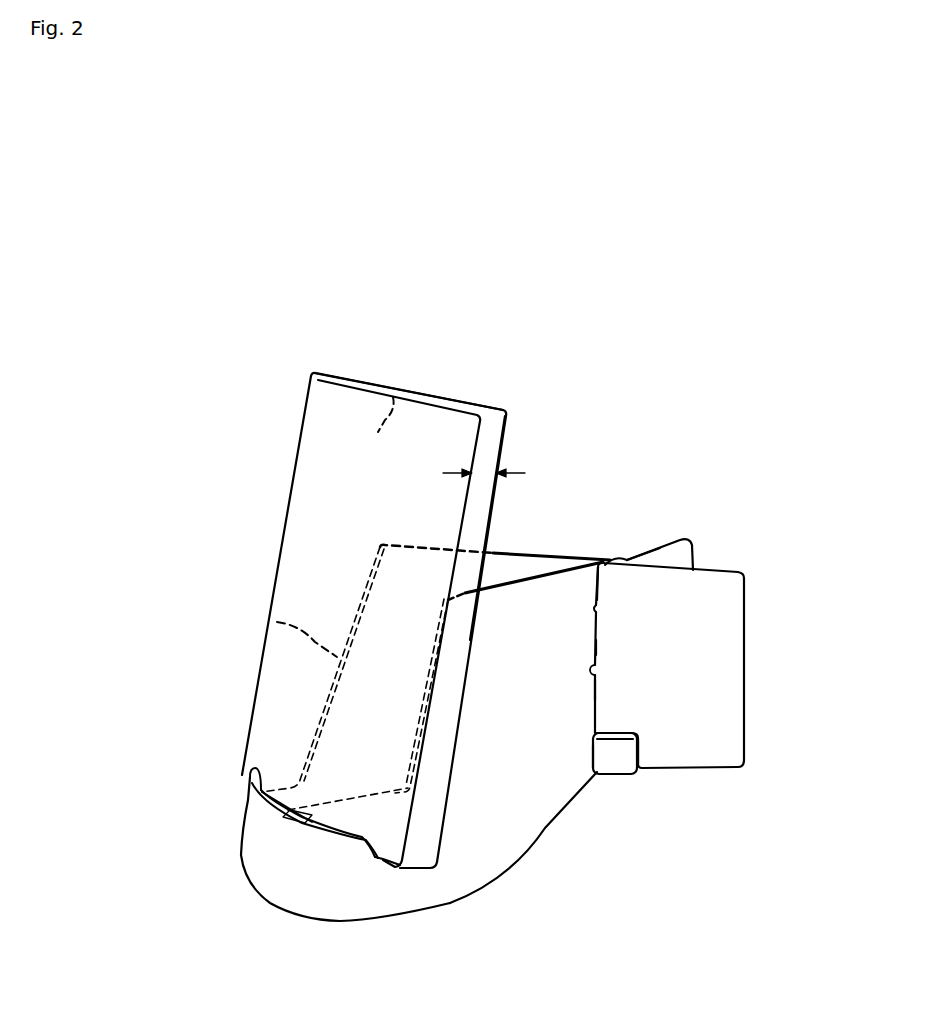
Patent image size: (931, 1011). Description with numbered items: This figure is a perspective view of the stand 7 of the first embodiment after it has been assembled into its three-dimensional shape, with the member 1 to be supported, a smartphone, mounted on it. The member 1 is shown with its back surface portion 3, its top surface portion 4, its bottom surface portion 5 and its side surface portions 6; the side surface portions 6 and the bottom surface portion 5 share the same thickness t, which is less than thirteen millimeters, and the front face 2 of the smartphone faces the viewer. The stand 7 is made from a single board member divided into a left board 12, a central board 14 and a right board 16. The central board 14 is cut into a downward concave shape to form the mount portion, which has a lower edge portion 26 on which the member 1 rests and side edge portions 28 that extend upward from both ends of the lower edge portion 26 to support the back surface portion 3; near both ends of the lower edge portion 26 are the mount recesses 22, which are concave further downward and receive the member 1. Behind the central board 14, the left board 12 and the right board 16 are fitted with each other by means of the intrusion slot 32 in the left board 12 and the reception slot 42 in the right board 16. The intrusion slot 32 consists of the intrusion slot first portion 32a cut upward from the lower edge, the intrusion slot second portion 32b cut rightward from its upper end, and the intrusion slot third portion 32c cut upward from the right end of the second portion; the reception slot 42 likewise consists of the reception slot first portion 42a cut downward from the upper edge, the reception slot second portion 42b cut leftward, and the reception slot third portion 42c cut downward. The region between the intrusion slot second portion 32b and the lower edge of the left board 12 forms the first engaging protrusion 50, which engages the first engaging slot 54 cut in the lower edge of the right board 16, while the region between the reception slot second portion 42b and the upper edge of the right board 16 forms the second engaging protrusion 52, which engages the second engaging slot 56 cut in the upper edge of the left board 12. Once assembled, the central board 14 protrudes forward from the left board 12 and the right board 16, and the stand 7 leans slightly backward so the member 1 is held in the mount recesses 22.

The member to be supported 1 is at (290, 491).
The front face of plate 2 is at (303, 577).
The back surface portion 3 is at (388, 387).
The top surface portion 4 is at (442, 400).
The bottom surface portion 5 is at (293, 820).
The side surface portion 6 is at (493, 433).
The stand 7 is at (704, 429).
The thickness t is at (483, 473).
The left board 12 is at (514, 554).
The central board 14 is at (248, 877).
The right board 16 is at (548, 836).
The mount recess 22 is at (373, 877).
The lower edge portion 26 is at (250, 795).
The side edge portion 28 is at (267, 622).
The intrusion slot 32 is at (806, 832).
The intrusion slot first portion 32a is at (652, 752).
The intrusion slot second portion 32b is at (624, 722).
The intrusion slot third portion 32c is at (613, 690).
The reception slot 42 is at (662, 502).
The reception slot first portion 42a is at (622, 546).
The reception slot second portion 42b is at (611, 617).
The reception slot third portion 42c is at (611, 647).
The first engaging protrusion 50 is at (610, 766).
The second engaging protrusion 52 is at (618, 545).
The first engaging slot 54 is at (582, 755).
The second engaging slot 56 is at (592, 586).